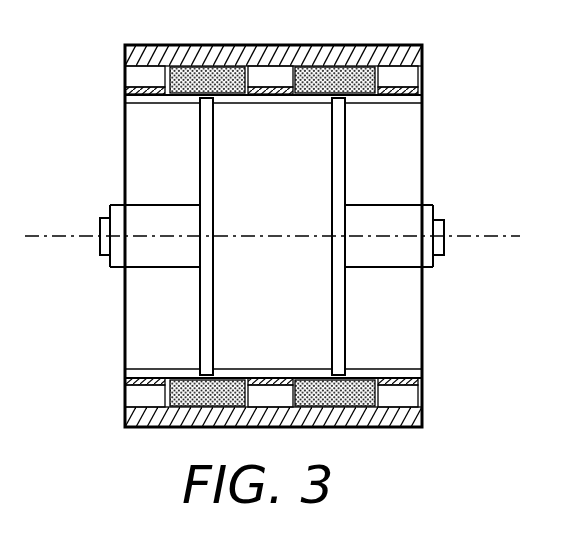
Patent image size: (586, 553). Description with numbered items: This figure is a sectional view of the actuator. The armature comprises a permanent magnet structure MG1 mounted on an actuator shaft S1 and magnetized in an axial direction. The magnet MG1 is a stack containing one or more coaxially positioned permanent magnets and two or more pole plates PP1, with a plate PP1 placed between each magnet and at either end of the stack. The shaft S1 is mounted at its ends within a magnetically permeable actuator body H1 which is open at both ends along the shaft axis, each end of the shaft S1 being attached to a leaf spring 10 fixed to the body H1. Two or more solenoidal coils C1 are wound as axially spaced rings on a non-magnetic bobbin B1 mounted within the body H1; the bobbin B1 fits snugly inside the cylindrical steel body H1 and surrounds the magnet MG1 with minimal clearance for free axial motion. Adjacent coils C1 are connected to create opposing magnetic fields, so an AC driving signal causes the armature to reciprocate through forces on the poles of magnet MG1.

The leaf spring 10 is at (125, 140).
The actuator body H1 is at (148, 428).
The bobbin B1 is at (150, 91).
The solenoidal coils C1 is at (187, 380).
The actuator shaft S1 is at (153, 258).
The pole plates PP1 is at (206, 190).
The permanent magnet structure MG1 is at (297, 198).